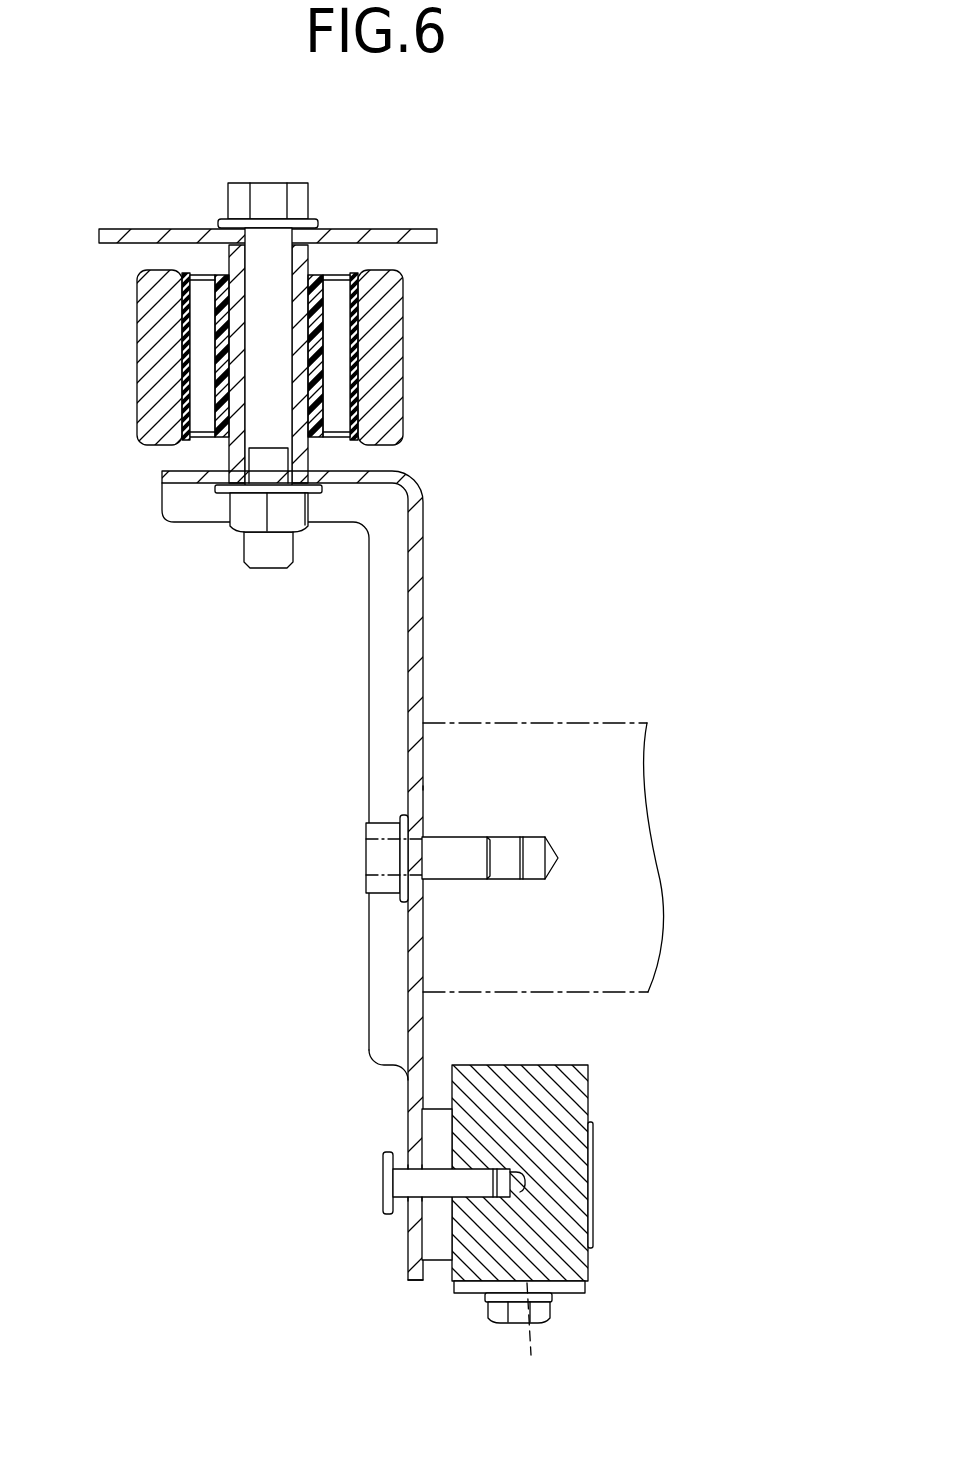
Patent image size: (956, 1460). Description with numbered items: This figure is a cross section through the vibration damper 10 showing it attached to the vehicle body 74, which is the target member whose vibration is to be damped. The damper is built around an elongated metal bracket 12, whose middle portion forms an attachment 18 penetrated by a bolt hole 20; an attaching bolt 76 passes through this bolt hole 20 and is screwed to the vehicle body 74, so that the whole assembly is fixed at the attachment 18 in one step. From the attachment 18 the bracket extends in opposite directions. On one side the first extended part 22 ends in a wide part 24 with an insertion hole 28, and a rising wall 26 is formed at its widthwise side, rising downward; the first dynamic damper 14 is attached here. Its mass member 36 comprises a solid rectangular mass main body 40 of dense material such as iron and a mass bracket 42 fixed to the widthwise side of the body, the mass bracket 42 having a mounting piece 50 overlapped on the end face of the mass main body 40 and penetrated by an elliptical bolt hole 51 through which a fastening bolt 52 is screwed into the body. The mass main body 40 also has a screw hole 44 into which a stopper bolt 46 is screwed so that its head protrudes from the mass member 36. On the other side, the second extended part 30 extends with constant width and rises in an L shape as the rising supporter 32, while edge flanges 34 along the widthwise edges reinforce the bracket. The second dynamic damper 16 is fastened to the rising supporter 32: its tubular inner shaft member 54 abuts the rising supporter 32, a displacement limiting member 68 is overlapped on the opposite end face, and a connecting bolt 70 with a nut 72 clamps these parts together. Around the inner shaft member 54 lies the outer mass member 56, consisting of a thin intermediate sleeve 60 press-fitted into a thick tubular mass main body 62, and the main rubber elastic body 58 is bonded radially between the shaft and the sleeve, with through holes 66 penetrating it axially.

The vibration damper 10 is at (517, 247).
The metal bracket 12 is at (342, 652).
The first dynamic damper 14 is at (620, 1097).
The second dynamic damper 16 is at (435, 363).
The attachment 18 is at (423, 786).
The bolt hole 20 is at (424, 879).
The first extended part 22 is at (403, 1127).
The wide part 24 is at (412, 1265).
The rising wall 26 is at (438, 1223).
The insertion hole 28 is at (418, 1153).
The second extended part 30 is at (428, 546).
The rising supporter 32 is at (331, 480).
The edge flange 34 is at (390, 718).
The mass member 36 is at (557, 1062).
The mass main body 40 is at (500, 1093).
The mass bracket 42 is at (568, 1303).
The screw hole 44 is at (521, 1178).
The stopper bolt 46 is at (410, 1180).
The mounting piece 50 is at (467, 1288).
The bolt hole 51 is at (527, 1333).
The fastening bolt 52 is at (497, 1315).
The inner shaft member 54 is at (302, 262).
The outer mass member 56 is at (130, 303).
The main rubber elastic body 58 is at (316, 377).
The intermediate sleeve 60 is at (180, 377).
The mass main body 62 is at (156, 355).
The through hole 66 is at (202, 304).
The displacement limiting member 68 is at (136, 238).
The connecting bolt 70 is at (268, 199).
The nut 72 is at (248, 511).
The vehicle body 74 is at (580, 752).
The attaching bolt 76 is at (383, 857).